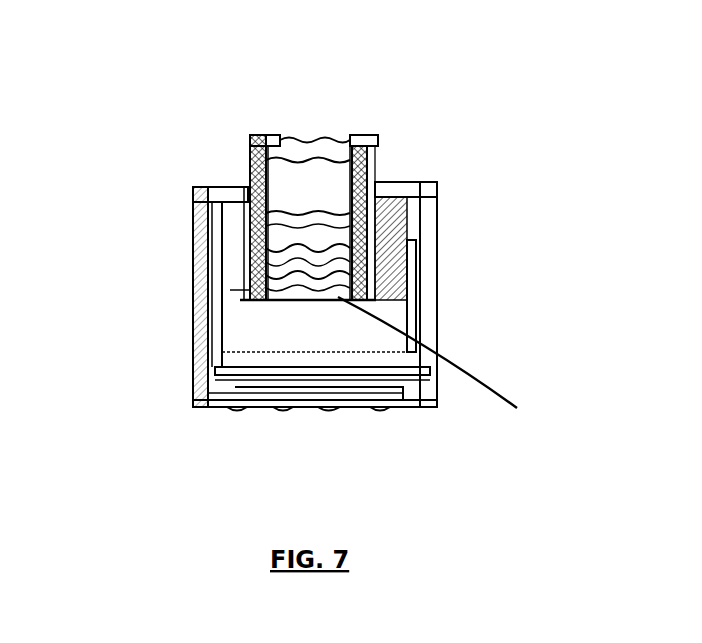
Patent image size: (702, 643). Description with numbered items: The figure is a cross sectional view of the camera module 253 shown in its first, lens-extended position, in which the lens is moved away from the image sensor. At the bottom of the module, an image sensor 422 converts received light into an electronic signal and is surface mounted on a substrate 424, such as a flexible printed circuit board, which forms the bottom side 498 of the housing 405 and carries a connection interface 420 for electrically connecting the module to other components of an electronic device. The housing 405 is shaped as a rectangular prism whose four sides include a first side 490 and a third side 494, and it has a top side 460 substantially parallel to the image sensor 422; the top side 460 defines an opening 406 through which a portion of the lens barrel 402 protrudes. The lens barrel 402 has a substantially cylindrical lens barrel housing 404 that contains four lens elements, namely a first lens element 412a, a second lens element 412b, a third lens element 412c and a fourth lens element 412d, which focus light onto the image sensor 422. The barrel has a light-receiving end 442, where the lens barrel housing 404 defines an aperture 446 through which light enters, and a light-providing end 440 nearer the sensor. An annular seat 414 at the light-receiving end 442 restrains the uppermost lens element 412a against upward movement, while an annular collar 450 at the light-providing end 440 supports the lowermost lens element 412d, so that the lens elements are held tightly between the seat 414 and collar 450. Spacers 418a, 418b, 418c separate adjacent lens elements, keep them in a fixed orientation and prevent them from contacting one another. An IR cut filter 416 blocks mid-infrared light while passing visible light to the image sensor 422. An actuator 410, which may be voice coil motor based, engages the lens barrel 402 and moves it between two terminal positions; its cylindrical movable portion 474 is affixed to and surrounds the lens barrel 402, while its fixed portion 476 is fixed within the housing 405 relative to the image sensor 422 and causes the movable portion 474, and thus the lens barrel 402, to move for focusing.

The camera module 253 is at (527, 83).
The lens barrel 402 is at (368, 165).
The lens barrel housing 404 is at (252, 133).
The housing 405 is at (428, 243).
The opening 406 is at (248, 184).
The actuator 410 is at (395, 293).
The first lens element 412a is at (336, 148).
The second lens element 412b is at (353, 217).
The third lens element 412c is at (360, 258).
The fourth lens element 412d is at (272, 300).
The seat 414 is at (368, 142).
The IR cut filter 416 is at (277, 368).
The spacer 418a is at (265, 208).
The spacer 418b is at (265, 236).
The spacer 418c is at (266, 274).
The connection interface 420 is at (333, 410).
The image sensor 422 is at (343, 392).
The substrate 424 is at (217, 407).
The light-providing end 440 is at (456, 361).
The light-receiving end 442 is at (262, 133).
The aperture 446 is at (286, 138).
The collar 450 is at (266, 303).
The top side 460 is at (220, 187).
The movable portion 474 is at (277, 285).
The fixed portion 476 is at (217, 348).
The first side 490 is at (197, 400).
The third side 494 is at (436, 342).
The bottom side 498 is at (405, 397).